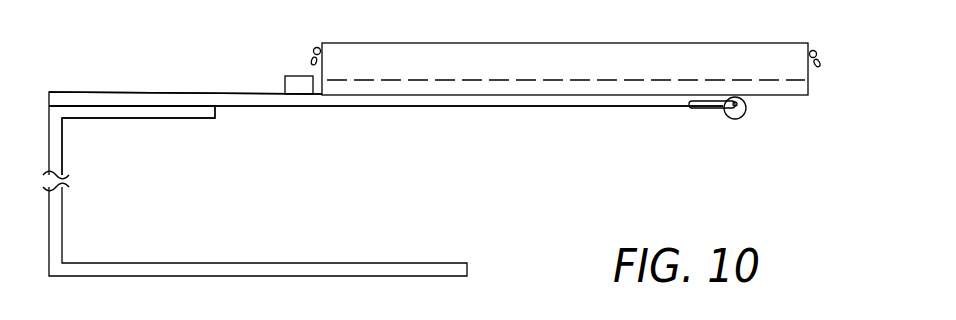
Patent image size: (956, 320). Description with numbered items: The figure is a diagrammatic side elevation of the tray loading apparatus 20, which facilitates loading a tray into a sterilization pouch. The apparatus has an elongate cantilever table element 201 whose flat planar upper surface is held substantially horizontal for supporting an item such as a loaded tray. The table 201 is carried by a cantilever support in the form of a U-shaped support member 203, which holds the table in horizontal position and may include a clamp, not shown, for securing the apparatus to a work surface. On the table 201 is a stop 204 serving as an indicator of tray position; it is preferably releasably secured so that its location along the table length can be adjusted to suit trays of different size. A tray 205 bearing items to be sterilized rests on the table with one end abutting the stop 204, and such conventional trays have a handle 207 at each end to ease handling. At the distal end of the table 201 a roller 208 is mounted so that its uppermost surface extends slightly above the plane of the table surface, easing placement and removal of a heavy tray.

The tray loading apparatus 20 is at (92, 90).
The elongate cantilever table element 201 is at (498, 100).
The U-shaped support member 203 is at (172, 121).
The stop 204 is at (283, 80).
The tray 205 is at (780, 50).
The handle 207 is at (313, 50).
The roller 208 is at (740, 115).